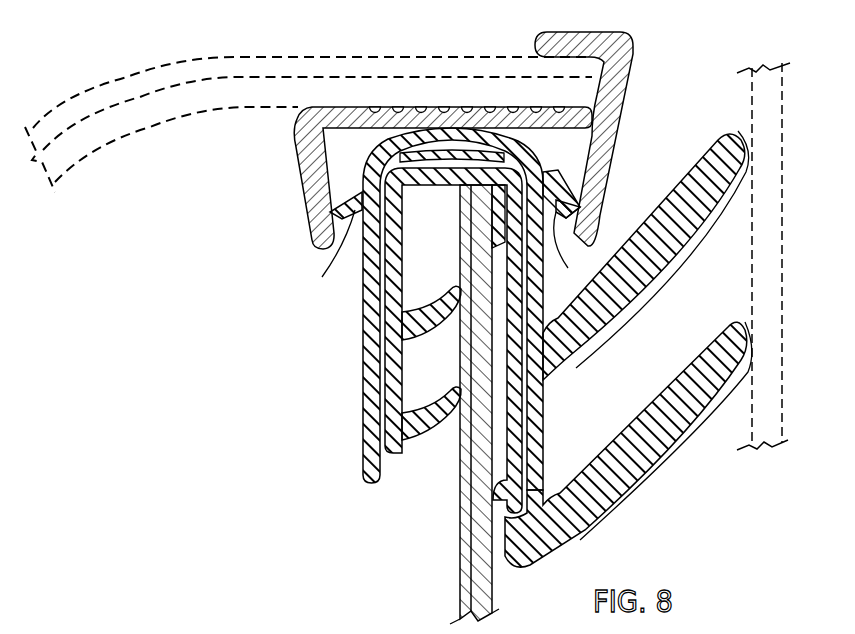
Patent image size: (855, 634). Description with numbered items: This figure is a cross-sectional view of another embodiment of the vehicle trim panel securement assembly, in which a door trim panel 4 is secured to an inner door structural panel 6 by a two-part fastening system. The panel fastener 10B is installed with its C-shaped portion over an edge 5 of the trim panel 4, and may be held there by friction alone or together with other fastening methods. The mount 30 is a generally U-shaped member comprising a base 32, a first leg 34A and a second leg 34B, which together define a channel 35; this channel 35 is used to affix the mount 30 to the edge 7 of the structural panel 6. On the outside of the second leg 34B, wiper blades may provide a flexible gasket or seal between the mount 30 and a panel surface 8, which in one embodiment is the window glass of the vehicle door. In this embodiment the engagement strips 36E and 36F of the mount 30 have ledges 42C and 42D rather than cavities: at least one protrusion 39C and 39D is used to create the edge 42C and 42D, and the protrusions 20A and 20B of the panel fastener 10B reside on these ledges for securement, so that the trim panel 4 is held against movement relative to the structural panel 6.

The door trim panel 4 is at (127, 77).
The edge of trim panel 5 is at (626, 100).
The inner door structural panel 6 is at (494, 583).
The edge of structural panel 7 is at (460, 549).
The panel surface 8 is at (784, 112).
The panel fastener 10B is at (638, 48).
The protrusion 20A is at (328, 240).
The protrusion 20B is at (572, 245).
The mount 30 is at (364, 411).
The base 32 is at (431, 186).
The first leg 34A is at (363, 338).
The second leg 34B is at (540, 402).
The channel 35 is at (423, 393).
The engagement strip 36E is at (357, 182).
The engagement strip 36F is at (550, 182).
The protrusion 39C is at (356, 213).
The protrusion 39D is at (553, 197).
The ledge 42C is at (330, 256).
The ledge 42D is at (565, 253).